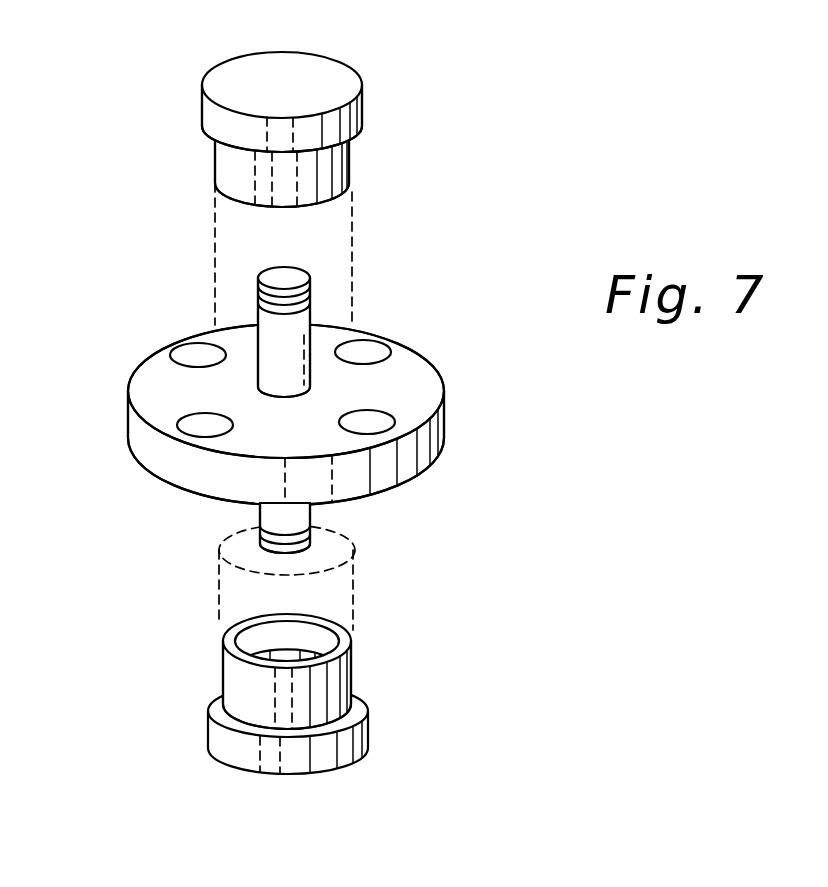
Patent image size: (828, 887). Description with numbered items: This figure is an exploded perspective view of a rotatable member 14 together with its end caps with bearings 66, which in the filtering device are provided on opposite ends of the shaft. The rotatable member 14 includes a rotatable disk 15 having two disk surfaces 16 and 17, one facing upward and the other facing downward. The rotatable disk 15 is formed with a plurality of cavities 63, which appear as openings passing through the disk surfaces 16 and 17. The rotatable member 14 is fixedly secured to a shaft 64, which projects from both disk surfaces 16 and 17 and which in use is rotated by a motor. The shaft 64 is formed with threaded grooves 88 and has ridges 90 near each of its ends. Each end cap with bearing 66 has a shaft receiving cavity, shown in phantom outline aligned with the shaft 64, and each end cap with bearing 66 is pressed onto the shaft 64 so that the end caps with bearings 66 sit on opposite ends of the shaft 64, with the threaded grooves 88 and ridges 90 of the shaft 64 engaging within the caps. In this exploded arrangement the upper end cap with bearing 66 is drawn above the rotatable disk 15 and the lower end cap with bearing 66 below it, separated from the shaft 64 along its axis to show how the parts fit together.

The rotatable member 14 is at (381, 337).
The rotatable disk 15 is at (444, 393).
The disk surface 16 is at (404, 388).
The disk surface 17 is at (284, 379).
The cavities 63 is at (195, 420).
The shaft 64 is at (275, 358).
The end caps with bearings 66 is at (290, 77).
The threaded grooves 88 is at (262, 310).
The ridges 90 is at (313, 292).